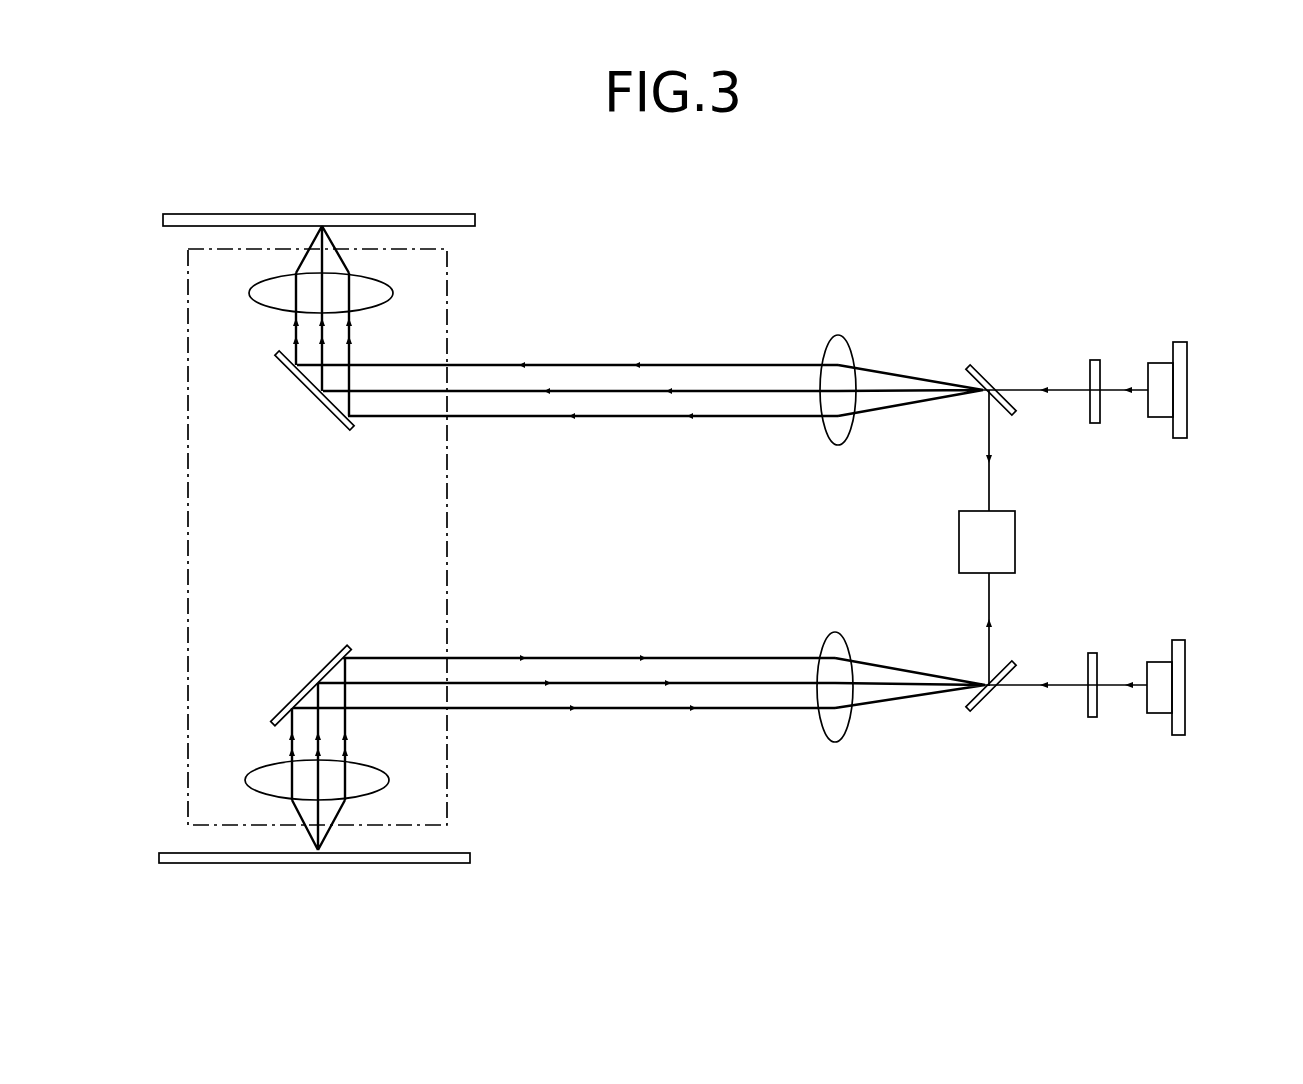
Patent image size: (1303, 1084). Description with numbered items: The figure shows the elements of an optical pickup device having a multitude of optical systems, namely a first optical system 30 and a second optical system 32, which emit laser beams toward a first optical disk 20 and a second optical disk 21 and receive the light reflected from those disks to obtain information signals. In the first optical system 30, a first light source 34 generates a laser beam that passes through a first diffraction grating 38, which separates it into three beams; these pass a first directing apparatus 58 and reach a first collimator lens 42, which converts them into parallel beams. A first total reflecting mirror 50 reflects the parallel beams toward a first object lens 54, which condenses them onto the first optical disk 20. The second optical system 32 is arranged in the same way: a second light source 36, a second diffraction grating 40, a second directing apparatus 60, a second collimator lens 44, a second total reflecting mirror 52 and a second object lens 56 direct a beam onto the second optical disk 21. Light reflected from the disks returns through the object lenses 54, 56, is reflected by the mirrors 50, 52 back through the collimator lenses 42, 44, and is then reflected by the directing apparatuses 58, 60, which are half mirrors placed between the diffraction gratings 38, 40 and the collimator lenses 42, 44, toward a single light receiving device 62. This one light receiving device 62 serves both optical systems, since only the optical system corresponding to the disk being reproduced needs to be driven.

The first optical disk 20 is at (432, 217).
The second optical disk 21 is at (433, 855).
The first optical system 30 is at (891, 306).
The second optical system 32 is at (921, 710).
The first light source 34 is at (1180, 393).
The second light source 36 is at (1178, 695).
The first diffraction grating 38 is at (1102, 372).
The second diffraction grating 40 is at (1088, 718).
The first collimator lens 42 is at (838, 345).
The second collimator lens 44 is at (840, 643).
The first total reflecting mirror 50 is at (326, 410).
The second total reflecting mirror 52 is at (328, 670).
The first object lens 54 is at (262, 295).
The second object lens 56 is at (257, 777).
The first directing apparatus 58 is at (985, 375).
The second directing apparatus 60 is at (975, 705).
The light receiving device 62 is at (1010, 535).